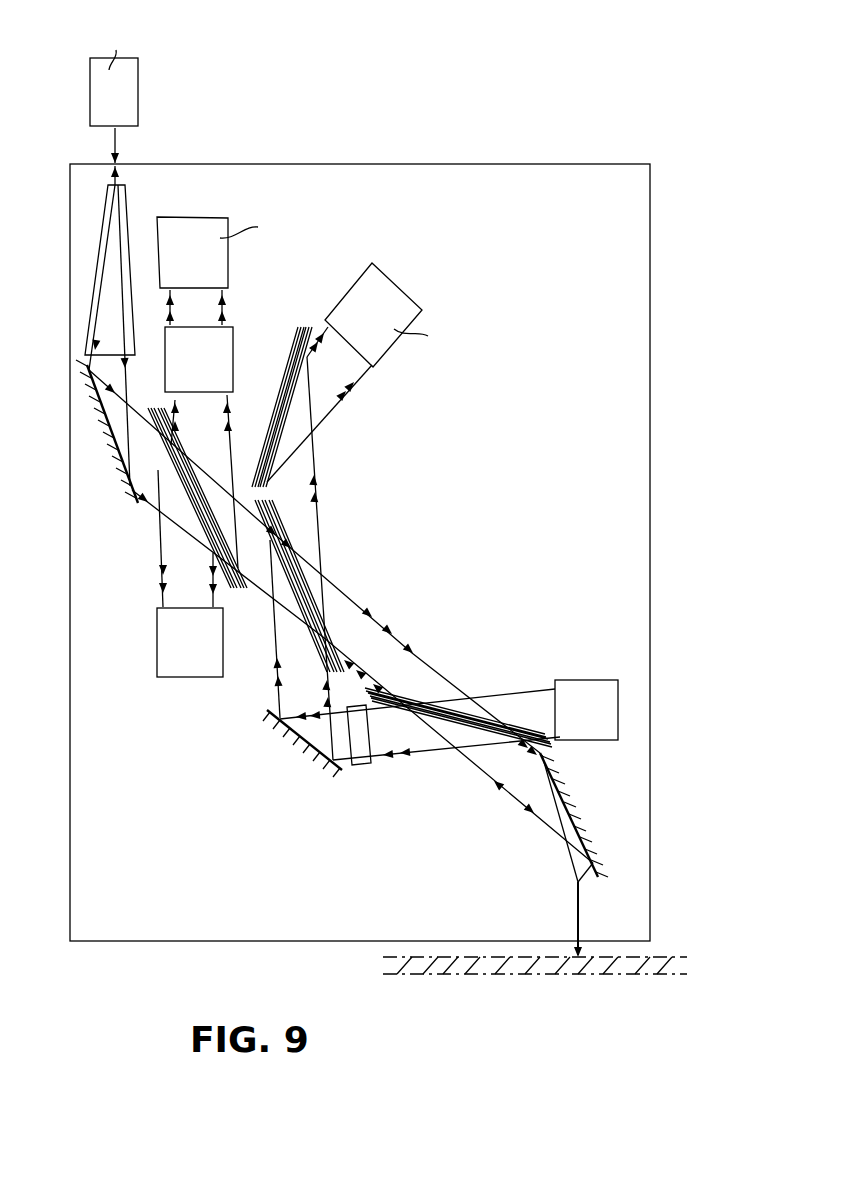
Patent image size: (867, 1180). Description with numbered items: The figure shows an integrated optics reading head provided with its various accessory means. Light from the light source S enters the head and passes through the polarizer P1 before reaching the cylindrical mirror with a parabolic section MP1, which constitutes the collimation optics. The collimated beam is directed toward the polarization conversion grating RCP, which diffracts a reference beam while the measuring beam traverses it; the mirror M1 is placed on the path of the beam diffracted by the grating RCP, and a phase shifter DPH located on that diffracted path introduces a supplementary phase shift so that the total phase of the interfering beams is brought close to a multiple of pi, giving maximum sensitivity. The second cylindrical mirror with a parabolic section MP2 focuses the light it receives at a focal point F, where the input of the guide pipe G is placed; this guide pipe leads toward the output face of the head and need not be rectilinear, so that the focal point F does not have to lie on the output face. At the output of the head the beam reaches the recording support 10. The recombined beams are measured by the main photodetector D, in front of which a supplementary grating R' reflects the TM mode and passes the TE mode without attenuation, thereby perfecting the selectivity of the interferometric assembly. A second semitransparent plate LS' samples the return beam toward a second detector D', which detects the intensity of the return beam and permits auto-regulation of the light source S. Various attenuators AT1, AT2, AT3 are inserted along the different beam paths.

The light source S is at (132, 73).
The polarizer P1 is at (126, 212).
The second detector D' is at (238, 225).
The attenuator AT2 is at (221, 352).
The main photodetector D is at (383, 361).
The supplementary grating R' is at (298, 460).
The cylindrical mirror with a parabolic section MP1 is at (112, 452).
The second semitransparent plate LS' is at (206, 539).
The attenuator AT1 is at (160, 655).
The mirror M1 is at (292, 740).
The phase shifter DPH is at (360, 766).
The polarization conversion grating RCP is at (462, 712).
The attenuator AT3 is at (590, 698).
The cylindrical mirror with a parabolic section MP2 is at (585, 820).
The focal point F is at (578, 882).
The guide pipe G is at (578, 905).
The grating 10 is at (549, 975).